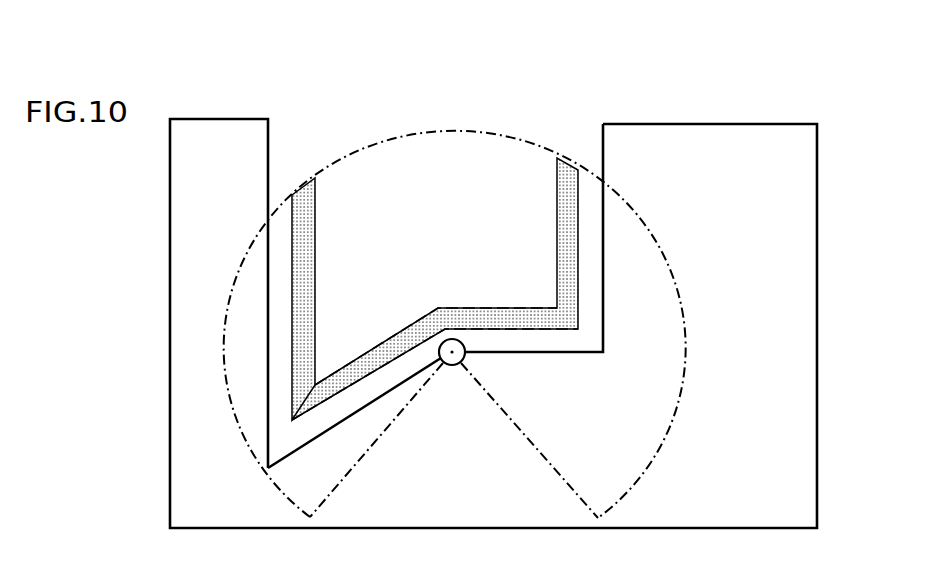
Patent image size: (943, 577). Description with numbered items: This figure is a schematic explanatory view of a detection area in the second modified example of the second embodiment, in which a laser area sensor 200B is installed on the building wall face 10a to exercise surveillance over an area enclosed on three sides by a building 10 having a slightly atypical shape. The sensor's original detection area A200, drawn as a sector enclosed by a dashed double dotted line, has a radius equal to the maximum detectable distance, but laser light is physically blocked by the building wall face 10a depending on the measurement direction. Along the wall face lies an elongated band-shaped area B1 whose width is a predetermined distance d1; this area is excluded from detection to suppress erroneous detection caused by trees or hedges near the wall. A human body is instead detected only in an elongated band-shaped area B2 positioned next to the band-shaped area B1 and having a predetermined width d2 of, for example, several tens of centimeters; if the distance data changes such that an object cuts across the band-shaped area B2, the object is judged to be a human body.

The building 10 is at (720, 143).
The building wall face 10a is at (603, 150).
The original detection area A200 is at (458, 135).
The band-shaped area B1 is at (276, 212).
The band-shaped area B2 is at (293, 190).
The laser area sensor 200B is at (452, 365).
The predetermined distance d1 is at (635, 295).
The predetermined distance d2 is at (610, 242).